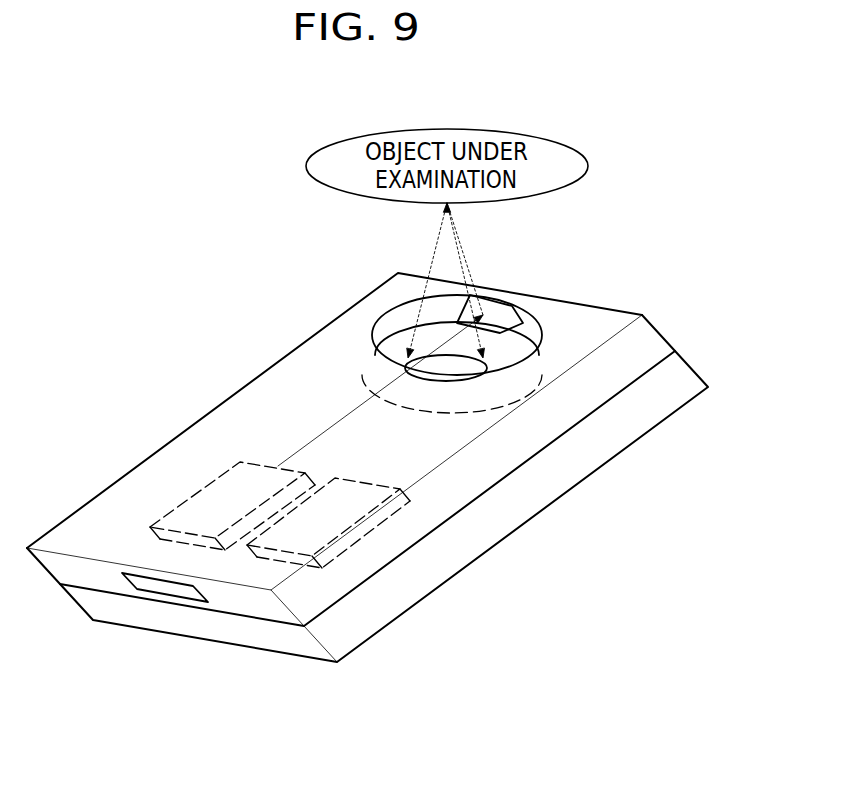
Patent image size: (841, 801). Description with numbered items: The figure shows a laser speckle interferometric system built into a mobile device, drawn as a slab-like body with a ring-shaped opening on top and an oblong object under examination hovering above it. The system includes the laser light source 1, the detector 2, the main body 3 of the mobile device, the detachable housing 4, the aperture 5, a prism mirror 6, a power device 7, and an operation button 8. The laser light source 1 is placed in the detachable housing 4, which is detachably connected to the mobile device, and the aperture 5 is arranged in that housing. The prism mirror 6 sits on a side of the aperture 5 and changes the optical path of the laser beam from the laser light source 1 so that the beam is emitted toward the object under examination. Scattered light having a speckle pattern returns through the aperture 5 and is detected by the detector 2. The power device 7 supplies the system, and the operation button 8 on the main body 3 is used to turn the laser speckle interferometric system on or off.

The laser light source 1 is at (202, 502).
The detector 2 is at (450, 370).
The main body 3 is at (463, 550).
The detachable housing 4 is at (358, 567).
The aperture 5 is at (540, 350).
The prism mirror 6 is at (500, 310).
The power device 7 is at (310, 513).
The operation button 8 is at (160, 587).